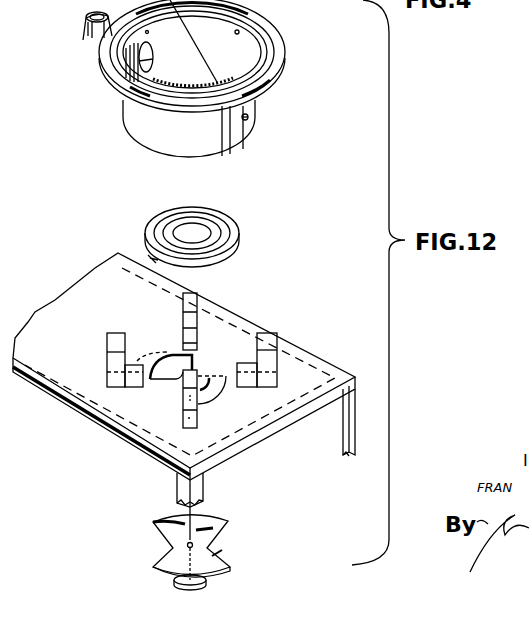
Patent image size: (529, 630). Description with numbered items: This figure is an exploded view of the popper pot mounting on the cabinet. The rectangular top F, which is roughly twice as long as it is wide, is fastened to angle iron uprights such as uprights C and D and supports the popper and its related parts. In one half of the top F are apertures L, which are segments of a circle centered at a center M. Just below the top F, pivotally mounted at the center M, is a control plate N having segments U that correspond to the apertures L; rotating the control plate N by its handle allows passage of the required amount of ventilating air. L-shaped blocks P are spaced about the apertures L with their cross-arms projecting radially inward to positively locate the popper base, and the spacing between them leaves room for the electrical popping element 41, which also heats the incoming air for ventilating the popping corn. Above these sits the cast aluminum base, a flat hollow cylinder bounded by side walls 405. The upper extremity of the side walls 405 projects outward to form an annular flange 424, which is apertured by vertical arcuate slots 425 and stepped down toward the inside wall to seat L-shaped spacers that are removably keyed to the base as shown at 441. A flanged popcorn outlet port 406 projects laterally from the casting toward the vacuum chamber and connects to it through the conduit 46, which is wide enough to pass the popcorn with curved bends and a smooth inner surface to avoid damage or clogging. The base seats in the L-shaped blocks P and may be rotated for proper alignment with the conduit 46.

The conduit 46 is at (93, 39).
The popcorn outlet port 406 is at (153, 58).
The key 441 is at (238, 31).
The vertical arcuate slots 425 is at (269, 42).
The annular flange 424 is at (284, 70).
The side walls 405 is at (256, 108).
The electrical popping element 41 is at (240, 233).
The top F is at (307, 370).
The upright D is at (350, 432).
The upright C is at (203, 498).
The center M is at (193, 377).
The L-shaped blocks P is at (277, 338).
The apertures L is at (217, 390).
The control plate N is at (232, 560).
The segments U is at (203, 530).